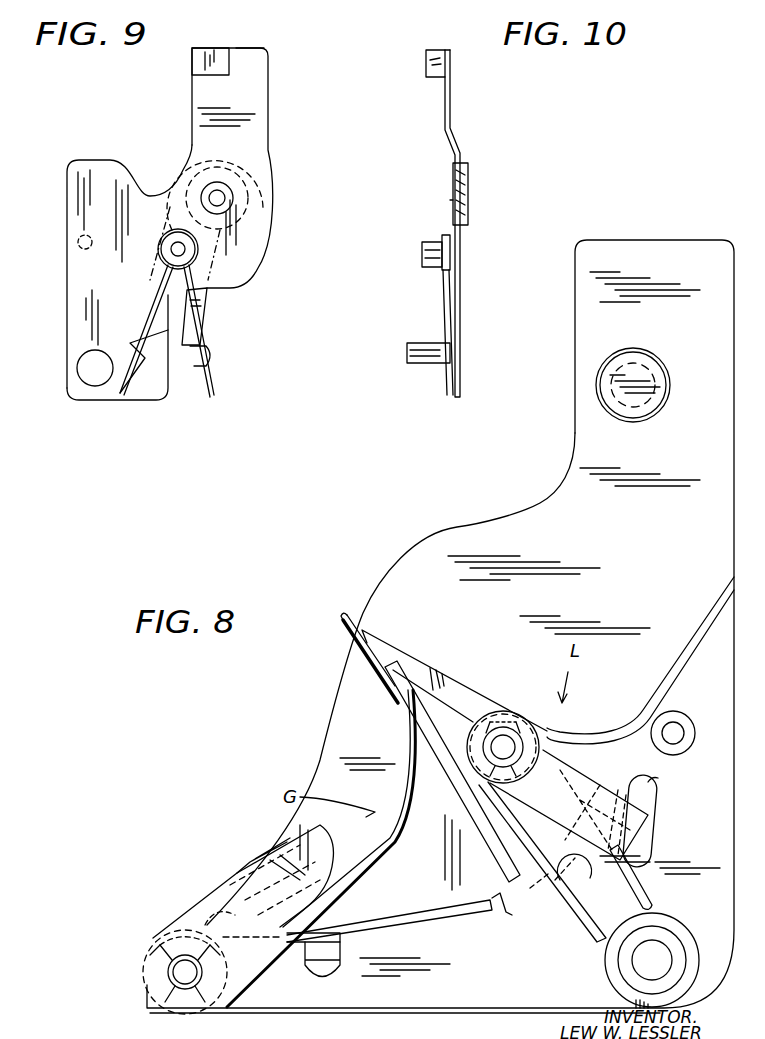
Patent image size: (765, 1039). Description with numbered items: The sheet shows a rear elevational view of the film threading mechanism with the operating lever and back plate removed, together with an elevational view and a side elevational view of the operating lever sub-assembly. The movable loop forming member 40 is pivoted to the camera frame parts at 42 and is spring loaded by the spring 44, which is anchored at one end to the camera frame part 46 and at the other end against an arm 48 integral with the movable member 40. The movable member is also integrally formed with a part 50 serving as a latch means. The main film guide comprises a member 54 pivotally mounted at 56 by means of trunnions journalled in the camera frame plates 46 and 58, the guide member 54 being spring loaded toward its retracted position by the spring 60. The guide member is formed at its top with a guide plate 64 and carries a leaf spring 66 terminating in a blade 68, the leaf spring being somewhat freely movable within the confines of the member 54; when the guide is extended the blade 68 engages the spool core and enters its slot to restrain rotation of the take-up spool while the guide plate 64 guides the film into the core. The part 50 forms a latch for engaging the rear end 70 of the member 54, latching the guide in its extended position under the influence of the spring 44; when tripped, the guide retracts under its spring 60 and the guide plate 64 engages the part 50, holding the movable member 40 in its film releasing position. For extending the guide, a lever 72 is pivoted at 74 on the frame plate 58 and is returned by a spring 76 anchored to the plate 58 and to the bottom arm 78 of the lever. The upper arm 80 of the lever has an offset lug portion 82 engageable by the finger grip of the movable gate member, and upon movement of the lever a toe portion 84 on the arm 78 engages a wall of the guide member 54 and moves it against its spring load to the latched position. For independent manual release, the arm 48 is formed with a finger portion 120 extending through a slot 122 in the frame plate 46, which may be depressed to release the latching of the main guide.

In FIG. 8, the movable loop forming member 40 is at (630, 718).
In FIG. 9, the pivot 42 is at (178, 249).
In FIG. 10, the pivot 42 is at (422, 245).
In FIG. 8, the pivot 42 is at (503, 747).
In FIG. 8, the spring 44 is at (530, 847).
In FIG. 8, the camera frame part 46 is at (447, 548).
In FIG. 8, the arm 48 is at (595, 795).
In FIG. 8, the latch part 50 is at (425, 672).
In FIG. 8, the guide member 54 is at (430, 879).
In FIG. 8, the pivot 56 is at (185, 989).
In FIG. 9, the frame plate 58 is at (67, 276).
In FIG. 10, the frame plate 58 is at (453, 208).
In FIG. 8, the spring 60 is at (288, 955).
In FIG. 8, the guide plate 64 is at (440, 747).
In FIG. 8, the leaf spring 66 is at (412, 770).
In FIG. 8, the blade 68 is at (348, 636).
In FIG. 8, the rear end 70 is at (509, 904).
In FIG. 9, the lever 72 is at (268, 135).
In FIG. 10, the lever 72 is at (458, 140).
In FIG. 9, the pivot 74 is at (221, 198).
In FIG. 10, the pivot 74 is at (468, 195).
In FIG. 9, the spring 76 is at (160, 318).
In FIG. 10, the spring 76 is at (445, 285).
In FIG. 9, the bottom arm 78 is at (205, 312).
In FIG. 9, the upper arm 80 is at (256, 68).
In FIG. 10, the upper arm 80 is at (450, 80).
In FIG. 9, the offset lug portion 82 is at (192, 62).
In FIG. 10, the offset lug portion 82 is at (426, 66).
In FIG. 9, the toe portion 84 is at (210, 360).
In FIG. 10, the toe portion 84 is at (410, 364).
In FIG. 8, the finger portion 120 is at (652, 826).
In FIG. 8, the slot 122 is at (656, 782).